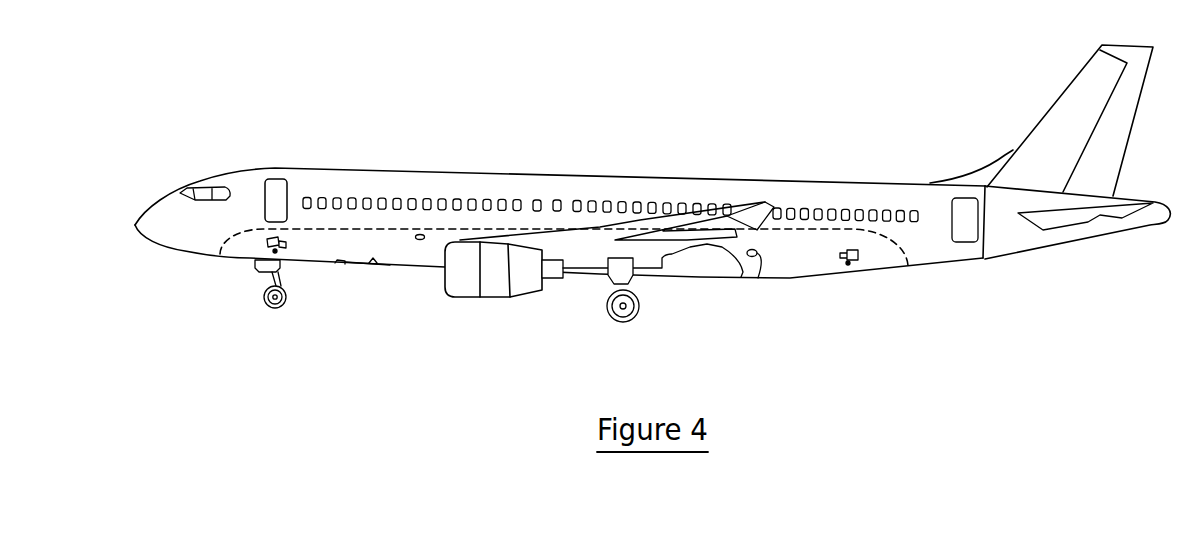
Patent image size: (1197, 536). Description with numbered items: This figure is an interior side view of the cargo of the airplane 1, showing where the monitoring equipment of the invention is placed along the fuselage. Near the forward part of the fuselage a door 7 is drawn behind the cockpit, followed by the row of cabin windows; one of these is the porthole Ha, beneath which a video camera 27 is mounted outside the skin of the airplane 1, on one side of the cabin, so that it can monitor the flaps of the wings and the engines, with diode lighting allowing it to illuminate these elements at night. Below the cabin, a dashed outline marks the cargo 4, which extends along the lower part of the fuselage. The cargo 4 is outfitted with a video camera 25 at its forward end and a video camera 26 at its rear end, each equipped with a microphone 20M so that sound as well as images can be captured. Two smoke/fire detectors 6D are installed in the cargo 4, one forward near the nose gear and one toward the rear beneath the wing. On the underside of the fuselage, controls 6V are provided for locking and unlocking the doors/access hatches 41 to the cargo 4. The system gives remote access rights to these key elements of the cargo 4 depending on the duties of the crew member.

The airplane 1 is at (803, 150).
The door 7 is at (276, 184).
The porthole Ha is at (537, 198).
The video camera 27 is at (558, 199).
The cargo 4 is at (406, 256).
The video camera 25 is at (270, 241).
The microphone 20M is at (275, 251).
The controls 6V is at (338, 266).
The doors/access hatches 41 is at (377, 264).
The smoke/fire detector 6D is at (424, 241).
The video camera 26 is at (858, 251).